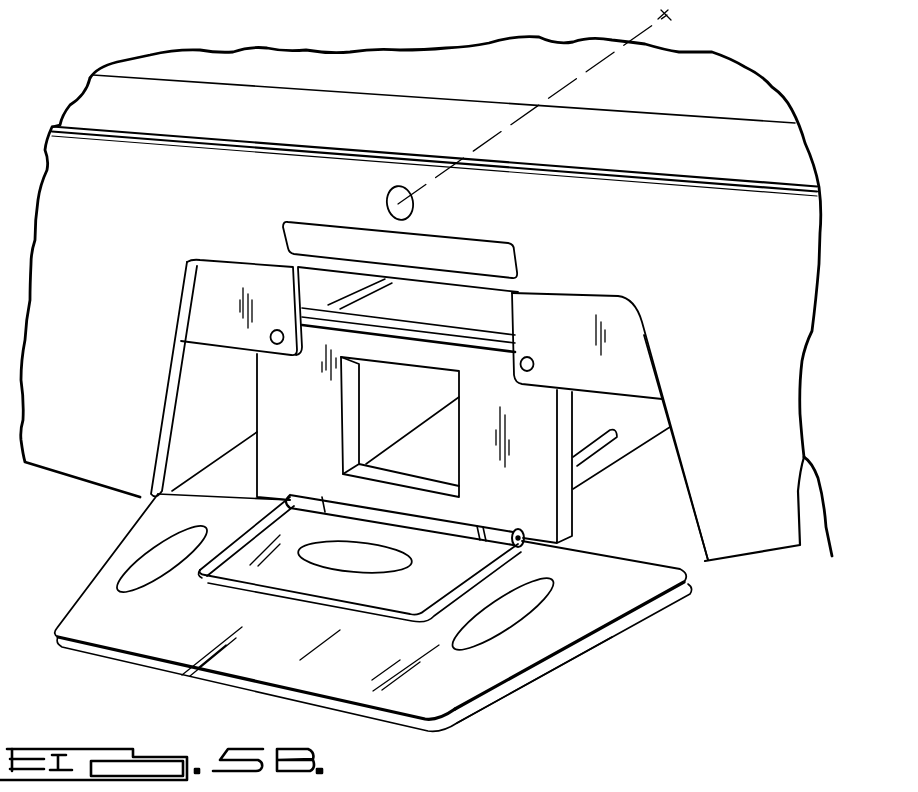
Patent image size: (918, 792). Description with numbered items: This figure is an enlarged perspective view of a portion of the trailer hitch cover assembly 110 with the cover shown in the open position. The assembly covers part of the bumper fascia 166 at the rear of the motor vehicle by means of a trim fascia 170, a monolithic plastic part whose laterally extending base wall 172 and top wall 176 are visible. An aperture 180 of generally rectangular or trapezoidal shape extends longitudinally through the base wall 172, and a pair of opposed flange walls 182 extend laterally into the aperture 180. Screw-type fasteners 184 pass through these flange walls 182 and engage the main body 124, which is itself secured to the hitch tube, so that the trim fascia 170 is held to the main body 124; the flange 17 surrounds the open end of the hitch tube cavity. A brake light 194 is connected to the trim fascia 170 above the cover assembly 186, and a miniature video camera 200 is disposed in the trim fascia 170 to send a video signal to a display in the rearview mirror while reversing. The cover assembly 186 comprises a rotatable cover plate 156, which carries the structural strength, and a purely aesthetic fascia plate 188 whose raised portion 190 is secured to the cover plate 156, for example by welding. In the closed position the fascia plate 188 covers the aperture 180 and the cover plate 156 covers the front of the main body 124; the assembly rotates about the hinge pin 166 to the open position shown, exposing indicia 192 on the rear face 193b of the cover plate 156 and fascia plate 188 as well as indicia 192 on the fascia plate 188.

The trailer hitch cover assembly 110 is at (710, 599).
The flange 17 is at (316, 308).
The main body 124 is at (538, 491).
The cover plate 156 is at (386, 586).
The bumper fascia 166 is at (443, 58).
The trim fascia 170 is at (773, 525).
The base wall 172 is at (735, 273).
The top wall 176 is at (674, 134).
The aperture 180 is at (684, 474).
The flange walls 182 is at (205, 287).
The fasteners 184 is at (275, 336).
The cover assembly 186 is at (576, 657).
The fascia plate 188 is at (477, 669).
The raised portion 190 is at (202, 575).
The indicia 192 is at (315, 545).
The rear face 193b is at (295, 657).
The brake light 194 is at (312, 228).
The video camera 200 is at (411, 212).